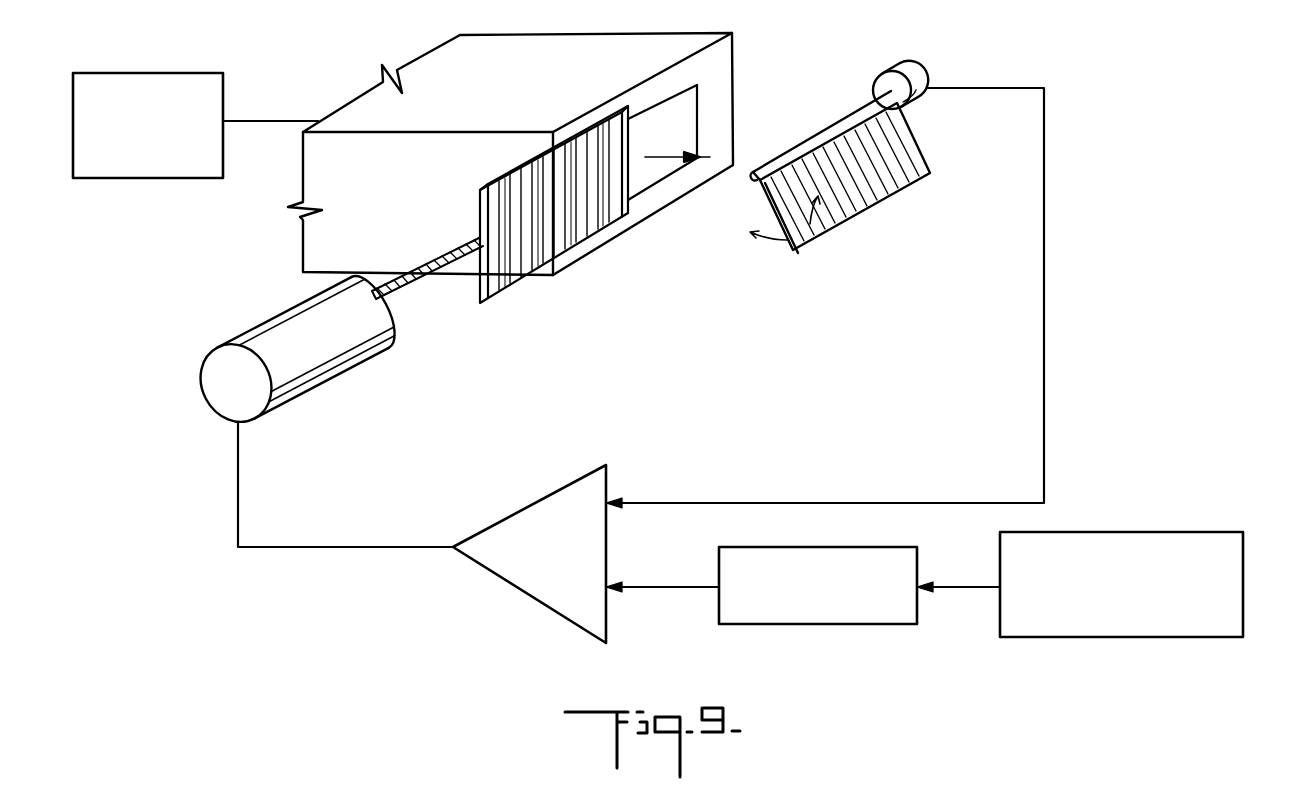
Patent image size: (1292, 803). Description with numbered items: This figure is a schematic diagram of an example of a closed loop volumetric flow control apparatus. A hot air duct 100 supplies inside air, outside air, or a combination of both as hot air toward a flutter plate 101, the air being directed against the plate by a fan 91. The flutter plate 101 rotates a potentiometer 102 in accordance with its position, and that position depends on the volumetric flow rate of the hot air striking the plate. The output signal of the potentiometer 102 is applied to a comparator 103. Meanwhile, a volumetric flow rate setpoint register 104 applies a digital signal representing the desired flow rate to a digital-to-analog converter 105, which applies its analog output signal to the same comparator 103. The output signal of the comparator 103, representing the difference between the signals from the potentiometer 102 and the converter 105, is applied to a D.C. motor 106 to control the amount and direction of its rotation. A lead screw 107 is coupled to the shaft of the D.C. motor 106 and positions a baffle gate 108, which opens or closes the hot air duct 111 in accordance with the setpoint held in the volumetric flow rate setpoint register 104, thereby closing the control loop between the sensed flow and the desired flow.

The fan 91 is at (150, 172).
The hot air duct 100 is at (472, 35).
The hot air duct 111 is at (718, 32).
The baffle gate 108 is at (475, 190).
The lead screw 107 is at (417, 270).
The D.C. motor 106 is at (267, 320).
The flutter plate 101 is at (903, 177).
The potentiometer 102 is at (895, 67).
The comparator 103 is at (533, 513).
The volumetric flow rate setpoint register 104 is at (1233, 537).
The digital-to-analog converter 105 is at (823, 625).